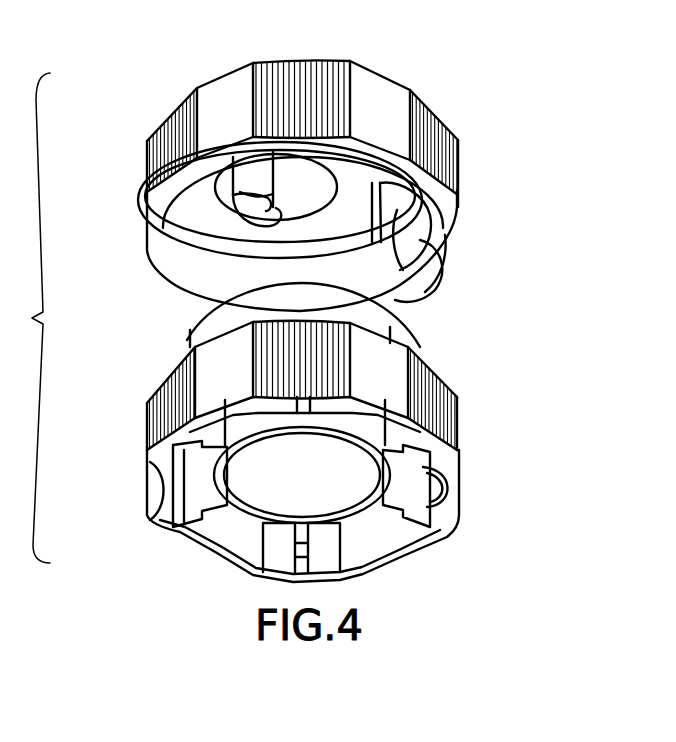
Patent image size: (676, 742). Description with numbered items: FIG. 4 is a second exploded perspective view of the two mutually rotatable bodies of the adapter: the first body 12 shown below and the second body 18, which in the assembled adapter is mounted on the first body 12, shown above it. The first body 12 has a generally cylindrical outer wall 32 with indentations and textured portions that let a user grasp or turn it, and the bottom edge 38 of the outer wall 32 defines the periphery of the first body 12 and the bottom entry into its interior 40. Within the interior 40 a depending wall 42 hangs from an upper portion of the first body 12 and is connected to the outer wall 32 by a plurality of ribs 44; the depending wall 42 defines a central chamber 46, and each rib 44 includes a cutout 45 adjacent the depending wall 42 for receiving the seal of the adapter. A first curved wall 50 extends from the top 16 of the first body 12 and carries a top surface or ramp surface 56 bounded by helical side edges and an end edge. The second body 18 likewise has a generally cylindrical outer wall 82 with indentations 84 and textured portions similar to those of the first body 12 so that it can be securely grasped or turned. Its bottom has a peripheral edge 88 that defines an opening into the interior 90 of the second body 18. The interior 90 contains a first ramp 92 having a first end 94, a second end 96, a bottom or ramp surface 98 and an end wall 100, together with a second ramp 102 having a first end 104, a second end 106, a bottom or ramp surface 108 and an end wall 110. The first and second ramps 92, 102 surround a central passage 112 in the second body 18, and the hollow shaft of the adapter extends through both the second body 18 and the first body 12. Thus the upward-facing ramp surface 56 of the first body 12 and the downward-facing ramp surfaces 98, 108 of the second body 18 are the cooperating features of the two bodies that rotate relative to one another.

The first body 12 is at (486, 400).
The top 16 is at (168, 380).
The second body 18 is at (482, 172).
The outer wall 32 is at (427, 502).
The bottom edge 38 is at (447, 461).
The interior 40 is at (187, 472).
The depending wall 42 is at (380, 492).
The ribs 44 is at (188, 510).
The cutout 45 is at (212, 508).
The central chamber 46 is at (317, 498).
The first curved wall 50 is at (205, 335).
The ramp surface 56 is at (205, 305).
The outer wall 82 is at (171, 130).
The indentations 84 is at (393, 107).
The peripheral edge 88 is at (435, 262).
The interior 90 is at (197, 266).
The first ramp 92 is at (410, 231).
The first end 94 is at (405, 285).
The second end 96 is at (365, 223).
The ramp surface 98 is at (410, 190).
The end wall 100 is at (400, 275).
The second ramp 102 is at (250, 222).
The first end 104 is at (352, 175).
The second end 106 is at (252, 185).
The ramp surface 108 is at (262, 230).
The end wall 110 is at (263, 172).
The central passage 112 is at (303, 187).